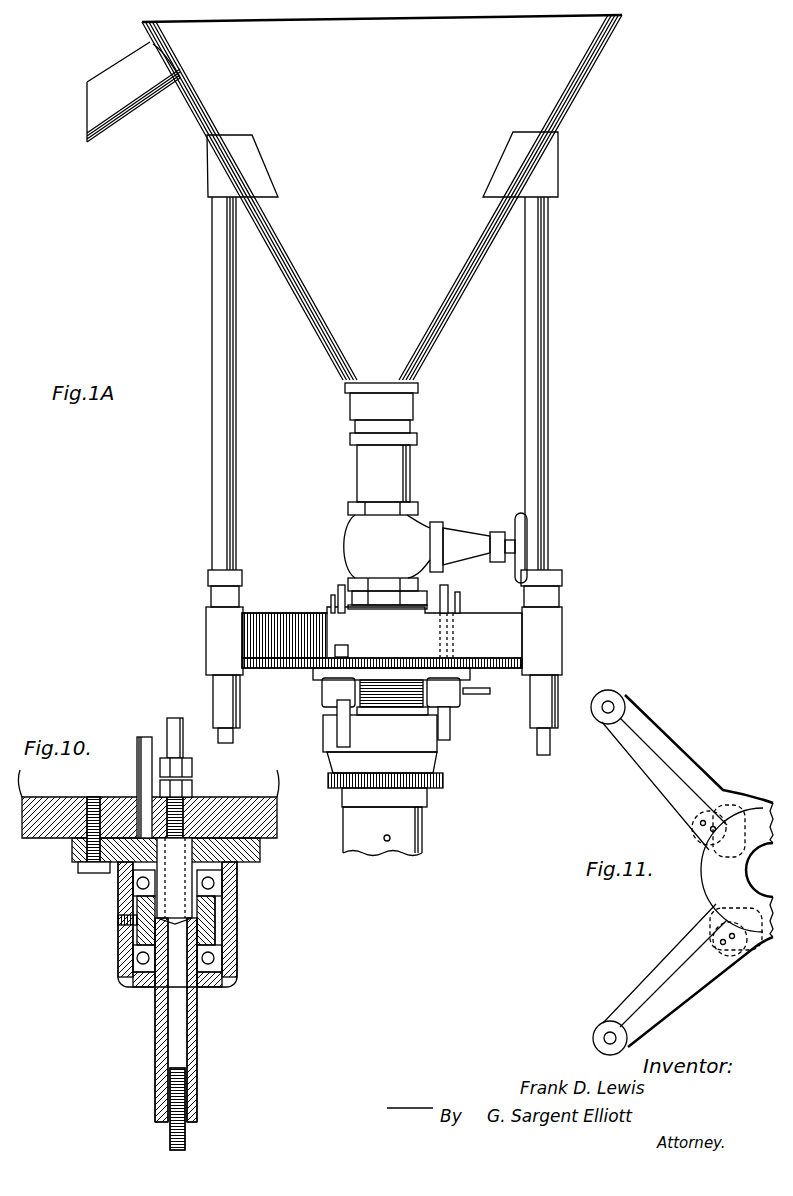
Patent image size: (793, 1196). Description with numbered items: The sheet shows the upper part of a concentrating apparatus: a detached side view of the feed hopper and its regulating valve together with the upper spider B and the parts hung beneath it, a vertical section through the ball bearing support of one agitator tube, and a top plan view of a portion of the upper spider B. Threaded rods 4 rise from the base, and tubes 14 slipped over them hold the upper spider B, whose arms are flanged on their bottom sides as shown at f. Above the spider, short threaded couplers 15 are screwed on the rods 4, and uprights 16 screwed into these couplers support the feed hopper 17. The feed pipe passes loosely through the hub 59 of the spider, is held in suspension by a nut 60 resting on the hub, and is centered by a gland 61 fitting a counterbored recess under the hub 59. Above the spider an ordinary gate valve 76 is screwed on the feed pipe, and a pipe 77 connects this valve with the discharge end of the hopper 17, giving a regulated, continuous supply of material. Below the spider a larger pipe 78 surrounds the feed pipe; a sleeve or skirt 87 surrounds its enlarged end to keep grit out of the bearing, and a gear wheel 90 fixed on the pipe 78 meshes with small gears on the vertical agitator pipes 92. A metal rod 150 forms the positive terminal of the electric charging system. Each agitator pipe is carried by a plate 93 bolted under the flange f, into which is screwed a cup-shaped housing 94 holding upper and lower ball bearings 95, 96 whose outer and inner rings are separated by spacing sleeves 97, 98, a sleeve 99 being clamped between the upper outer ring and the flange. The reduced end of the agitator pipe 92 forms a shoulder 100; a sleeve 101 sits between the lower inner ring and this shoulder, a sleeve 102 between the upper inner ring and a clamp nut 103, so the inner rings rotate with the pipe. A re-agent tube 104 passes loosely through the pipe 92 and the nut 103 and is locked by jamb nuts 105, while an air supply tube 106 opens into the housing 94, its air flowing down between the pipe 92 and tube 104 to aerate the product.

In FIG. 1A, the feed hopper 17 is at (354, 197).
In FIG. 1A, the uprights 16 is at (236, 438).
In FIG. 1A, the threaded couplers 15 is at (208, 597).
In FIG. 1A, the tubes 14 is at (213, 693).
In FIG. 1A, the rods 4 is at (233, 738).
In FIG. 1A, the hub 59 is at (382, 637).
In FIG. 1A, the nut 60 is at (370, 603).
In FIG. 1A, the gland 61 is at (390, 667).
In FIG. 1A, the pipe 77 is at (357, 474).
In FIG. 1A, the gate valve 76 is at (345, 546).
In FIG. 1A, the tube 104 is at (338, 589).
In FIG. 10, the tube 104 is at (185, 1135).
In FIG. 1A, the second tube 106 is at (331, 600).
In FIG. 10, the second tube 106 is at (137, 775).
In FIG. 1A, the upper spider B is at (282, 668).
In FIG. 11, the upper spider B is at (757, 795).
In FIG. 1A, the cup-shaped housing 94 is at (322, 699).
In FIG. 10, the cup-shaped housing 94 is at (237, 913).
In FIG. 1A, the metal rod 150 is at (490, 692).
In FIG. 1A, the sleeve or skirt 87 is at (323, 748).
In FIG. 1A, the agitator pipes 92 is at (337, 731).
In FIG. 10, the agitator pipes 92 is at (155, 1038).
In FIG. 1A, the gear wheel 90 is at (443, 783).
In FIG. 1A, the pipe 78 is at (422, 823).
In FIG. 10, the flange f is at (43, 810).
In FIG. 11, the flange f is at (655, 779).
In FIG. 10, the plate 93 is at (260, 862).
In FIG. 10, the sleeve 102 is at (112, 870).
In FIG. 10, the clamp nut 103 is at (180, 847).
In FIG. 10, the jamb nuts 105 is at (192, 768).
In FIG. 10, the sleeve 99 is at (237, 875).
In FIG. 10, the upper ball bearing 95 is at (133, 893).
In FIG. 10, the lower ball bearing 96 is at (137, 962).
In FIG. 10, the spacing sleeve 97 is at (118, 921).
In FIG. 10, the spacing sleeve 98 is at (222, 945).
In FIG. 10, the shoulder 100 is at (140, 993).
In FIG. 10, the sleeve 101 is at (218, 990).